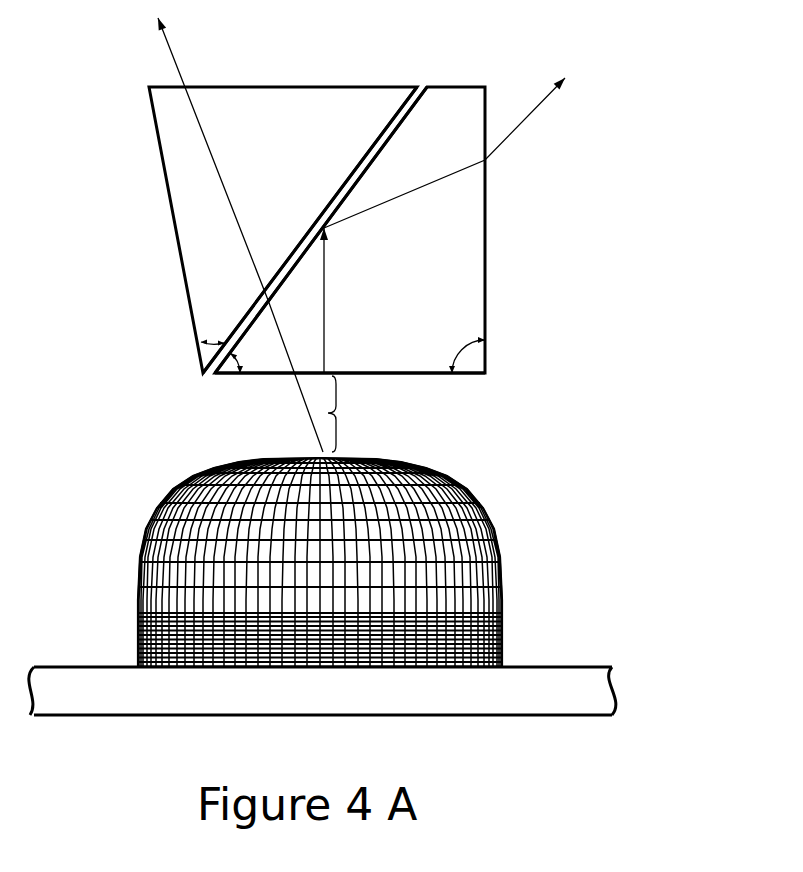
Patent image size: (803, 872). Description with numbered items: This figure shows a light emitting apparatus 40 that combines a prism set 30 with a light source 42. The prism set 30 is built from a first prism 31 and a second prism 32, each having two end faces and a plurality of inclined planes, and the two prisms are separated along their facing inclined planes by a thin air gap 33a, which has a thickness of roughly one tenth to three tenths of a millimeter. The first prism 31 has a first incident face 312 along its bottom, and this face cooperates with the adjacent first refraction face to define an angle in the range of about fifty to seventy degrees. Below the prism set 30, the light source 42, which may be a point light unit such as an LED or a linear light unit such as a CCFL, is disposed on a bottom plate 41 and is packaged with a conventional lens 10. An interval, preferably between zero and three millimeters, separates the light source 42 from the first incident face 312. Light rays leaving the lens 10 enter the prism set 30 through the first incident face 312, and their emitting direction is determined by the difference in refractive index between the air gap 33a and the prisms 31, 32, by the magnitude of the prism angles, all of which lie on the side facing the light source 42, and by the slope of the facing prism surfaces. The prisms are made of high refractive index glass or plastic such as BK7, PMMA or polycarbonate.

The light emitting apparatus 40 is at (688, 106).
The prism set 30 is at (582, 92).
The second prism 32 is at (301, 172).
The first prism 31 is at (422, 264).
The air gap 33a is at (420, 94).
The first incident face 312 is at (380, 374).
The light source 42 is at (582, 455).
The lens 10 is at (478, 490).
The bottom plate 41 is at (612, 690).